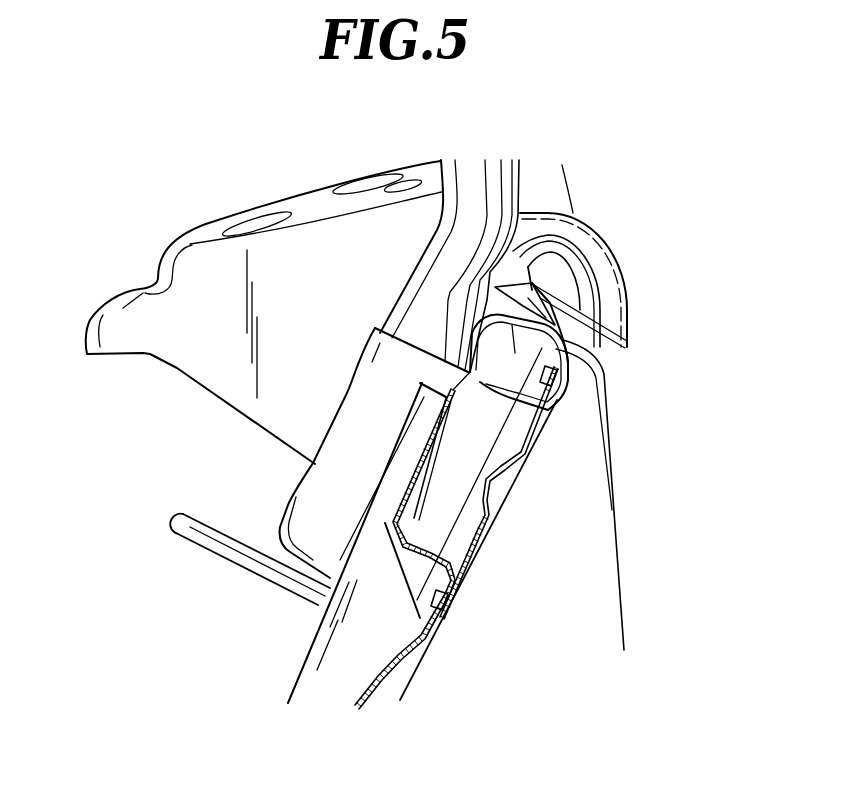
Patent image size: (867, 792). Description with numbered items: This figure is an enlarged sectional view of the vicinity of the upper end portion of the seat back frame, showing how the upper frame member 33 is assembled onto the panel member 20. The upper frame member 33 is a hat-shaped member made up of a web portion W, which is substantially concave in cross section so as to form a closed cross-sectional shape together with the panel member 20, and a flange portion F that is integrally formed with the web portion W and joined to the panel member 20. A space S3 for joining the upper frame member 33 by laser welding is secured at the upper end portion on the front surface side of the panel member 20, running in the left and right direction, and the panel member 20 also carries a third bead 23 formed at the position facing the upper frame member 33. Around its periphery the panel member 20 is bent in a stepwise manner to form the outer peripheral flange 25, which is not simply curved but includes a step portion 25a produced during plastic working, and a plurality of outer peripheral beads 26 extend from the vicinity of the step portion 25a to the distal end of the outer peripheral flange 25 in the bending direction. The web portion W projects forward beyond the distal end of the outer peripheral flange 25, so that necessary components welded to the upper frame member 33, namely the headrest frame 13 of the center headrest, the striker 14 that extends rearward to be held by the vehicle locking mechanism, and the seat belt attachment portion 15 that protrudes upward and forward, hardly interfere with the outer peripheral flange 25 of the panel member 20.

The headrest frame 13 is at (508, 185).
The striker 14 is at (598, 243).
The seat belt attachment portion 15 is at (307, 203).
The panel member 20 is at (413, 683).
The third bead 23 is at (497, 480).
The outer peripheral flange 25 is at (555, 295).
The step portion 25a is at (565, 329).
The outer peripheral beads 26 is at (543, 310).
The upper frame member 33 is at (400, 478).
The web portion W is at (427, 445).
The space S3 is at (482, 520).
The flange portion F is at (557, 388).